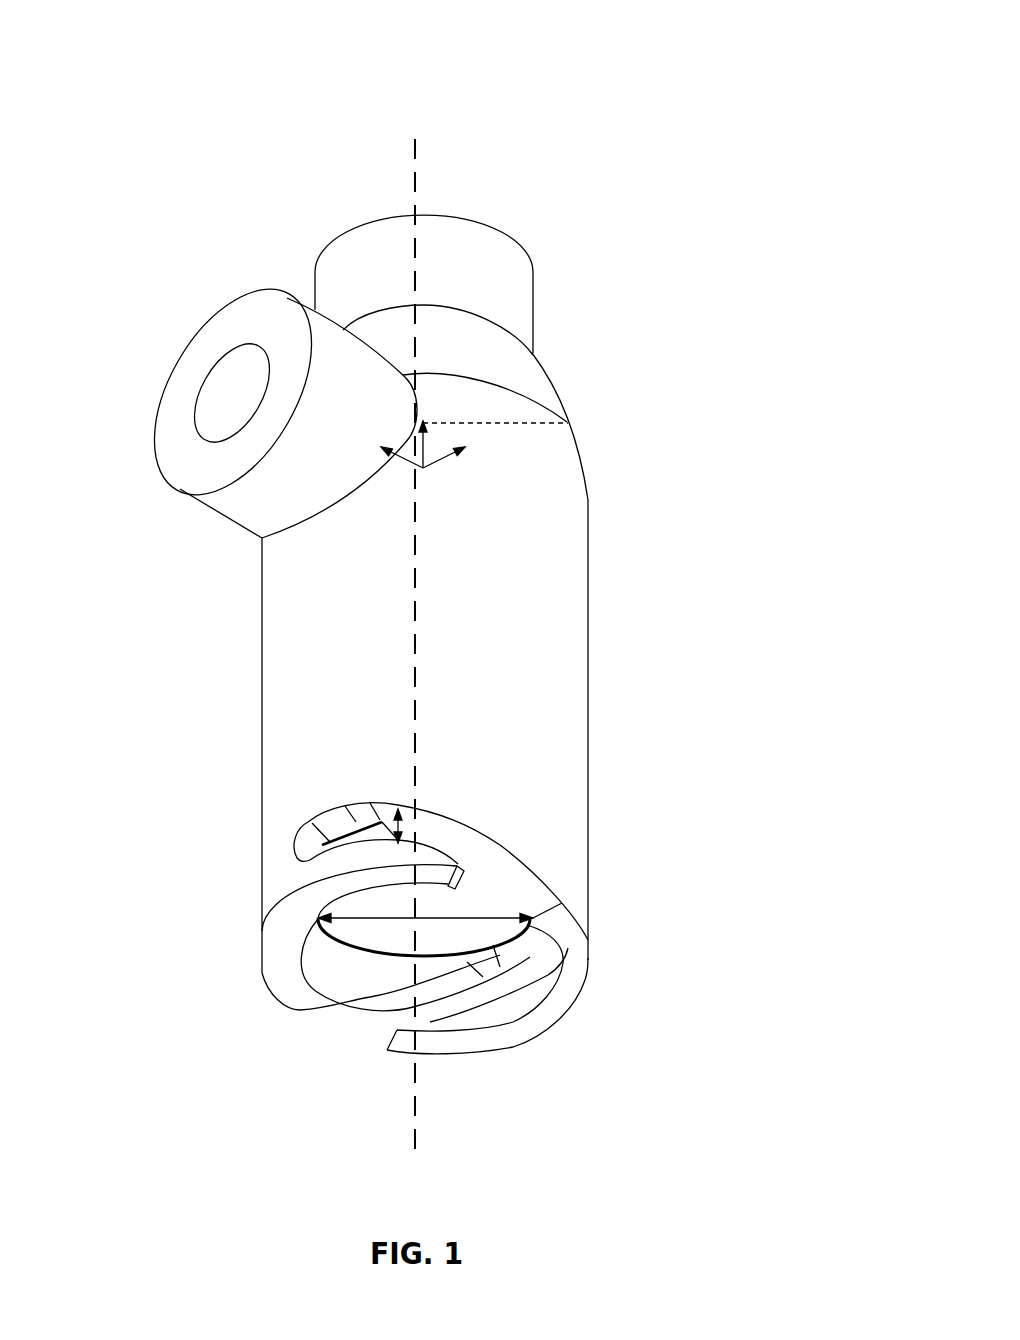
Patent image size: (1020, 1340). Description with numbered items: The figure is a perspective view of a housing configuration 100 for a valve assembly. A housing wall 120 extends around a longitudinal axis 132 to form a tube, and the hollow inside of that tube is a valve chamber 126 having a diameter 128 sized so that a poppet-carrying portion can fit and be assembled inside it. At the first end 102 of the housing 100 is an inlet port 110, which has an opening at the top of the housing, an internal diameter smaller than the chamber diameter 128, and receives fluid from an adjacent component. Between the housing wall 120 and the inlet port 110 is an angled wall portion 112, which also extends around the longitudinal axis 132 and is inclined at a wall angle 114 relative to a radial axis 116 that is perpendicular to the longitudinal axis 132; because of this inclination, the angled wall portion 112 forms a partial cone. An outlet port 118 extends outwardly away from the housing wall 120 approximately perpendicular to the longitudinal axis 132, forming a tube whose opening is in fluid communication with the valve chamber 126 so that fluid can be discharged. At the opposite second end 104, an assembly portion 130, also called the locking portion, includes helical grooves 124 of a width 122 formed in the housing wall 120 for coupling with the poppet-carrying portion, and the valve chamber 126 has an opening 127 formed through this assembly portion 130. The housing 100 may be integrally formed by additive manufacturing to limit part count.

The housing configuration 100 is at (773, 33).
The first end 102 is at (276, 274).
The second end 104 is at (610, 933).
The inlet port 110 is at (529, 285).
The angled wall portion 112 is at (522, 368).
The wall angle 114 is at (547, 421).
The radial axis 116 is at (522, 423).
The outlet port 118 is at (198, 375).
The housing wall 120 is at (280, 656).
The width 122 is at (400, 833).
The helical grooves 124 is at (514, 860).
The valve chamber 126 is at (383, 946).
The opening 127 is at (524, 1026).
The diameter 128 is at (360, 920).
The assembly portion 130 is at (436, 924).
The longitudinal axis 132 is at (412, 174).